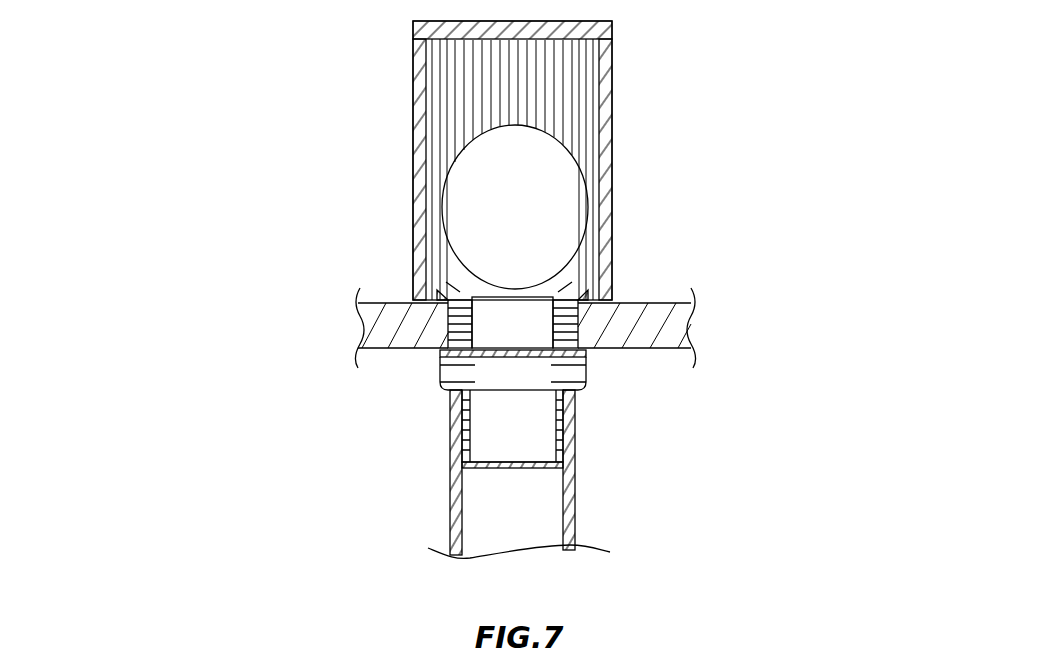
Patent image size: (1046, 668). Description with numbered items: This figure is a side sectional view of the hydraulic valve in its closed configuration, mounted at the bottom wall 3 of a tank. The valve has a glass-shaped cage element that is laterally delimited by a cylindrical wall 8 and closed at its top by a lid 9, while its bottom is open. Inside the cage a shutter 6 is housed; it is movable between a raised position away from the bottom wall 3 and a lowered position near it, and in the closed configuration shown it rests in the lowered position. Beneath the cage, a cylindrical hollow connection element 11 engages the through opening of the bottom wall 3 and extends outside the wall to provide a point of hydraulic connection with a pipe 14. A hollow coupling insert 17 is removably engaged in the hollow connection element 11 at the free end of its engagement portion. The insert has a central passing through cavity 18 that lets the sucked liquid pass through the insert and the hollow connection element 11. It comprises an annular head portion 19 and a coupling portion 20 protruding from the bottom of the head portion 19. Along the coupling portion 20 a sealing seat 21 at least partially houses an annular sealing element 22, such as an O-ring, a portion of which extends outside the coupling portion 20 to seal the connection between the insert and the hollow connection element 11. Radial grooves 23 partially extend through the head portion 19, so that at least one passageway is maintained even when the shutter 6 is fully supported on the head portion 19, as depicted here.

The bottom wall 3 is at (660, 330).
The shutter 6 is at (505, 224).
The cylindrical wall 8 is at (418, 102).
The lid 9 is at (580, 24).
The hollow connection element 11 is at (428, 391).
The pipe 14 is at (577, 492).
The hollow coupling insert 17 is at (516, 372).
The central passing through cavity 18 is at (499, 337).
The head portion 19 is at (455, 300).
The coupling portion 20 is at (466, 340).
The sealing seat 21 is at (450, 303).
The annular sealing element 22 is at (585, 322).
The radial grooves 23 is at (452, 282).